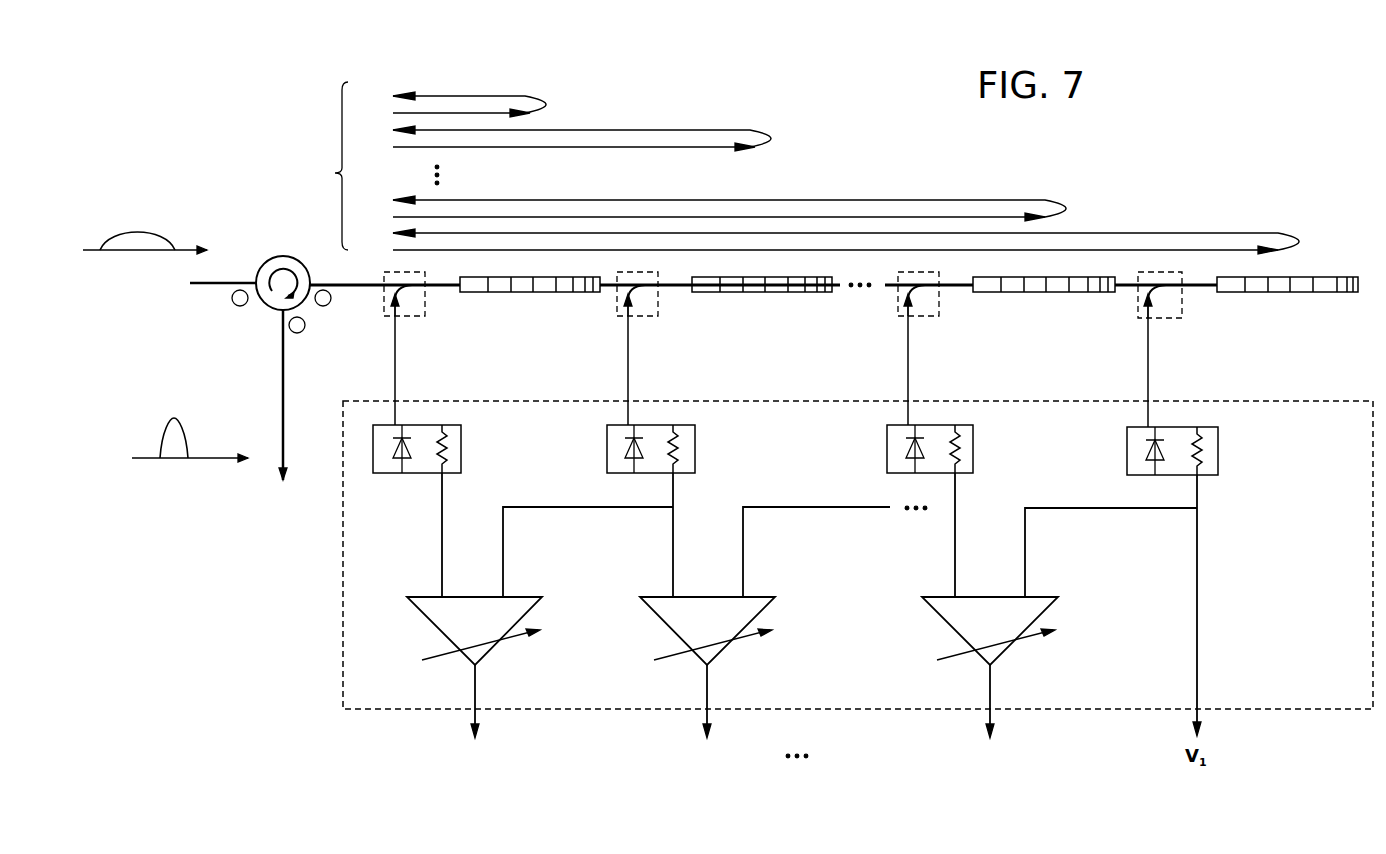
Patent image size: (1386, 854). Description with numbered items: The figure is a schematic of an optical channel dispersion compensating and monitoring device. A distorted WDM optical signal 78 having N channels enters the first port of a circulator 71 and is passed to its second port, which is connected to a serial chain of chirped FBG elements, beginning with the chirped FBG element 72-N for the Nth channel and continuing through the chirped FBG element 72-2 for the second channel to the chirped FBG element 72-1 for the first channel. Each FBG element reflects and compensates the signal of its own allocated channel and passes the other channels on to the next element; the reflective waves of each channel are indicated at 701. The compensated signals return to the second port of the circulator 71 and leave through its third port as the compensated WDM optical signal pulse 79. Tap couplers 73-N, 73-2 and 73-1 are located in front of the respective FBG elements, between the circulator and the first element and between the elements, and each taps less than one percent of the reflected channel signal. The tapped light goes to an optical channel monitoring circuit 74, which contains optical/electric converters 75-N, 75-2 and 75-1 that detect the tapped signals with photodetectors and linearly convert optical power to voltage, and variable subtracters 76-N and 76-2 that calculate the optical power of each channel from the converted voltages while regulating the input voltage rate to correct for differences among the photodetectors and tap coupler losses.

The circulator 71 is at (283, 256).
The reflective waves of each channel 701 is at (335, 173).
The chirped FBG element 72-1 is at (1325, 278).
The chirped FBG element 72-2 is at (1033, 294).
The chirped FBG element 72-N is at (522, 294).
The tap coupler 73-1 is at (1138, 308).
The tap coupler 73-2 is at (898, 306).
The tap coupler 73-N is at (384, 311).
The optical channel monitoring circuit 74 is at (343, 592).
The optical/electric converter 75-1 is at (1127, 455).
The optical/electric converter 75-2 is at (887, 452).
The optical/electric converter 75-N is at (461, 458).
The variable subtracter 76-2 is at (1006, 650).
The variable subtracter 76-N is at (490, 650).
The distorted WDM optical signal 78 is at (130, 206).
The compensated WDM optical signal pulse 79 is at (170, 409).